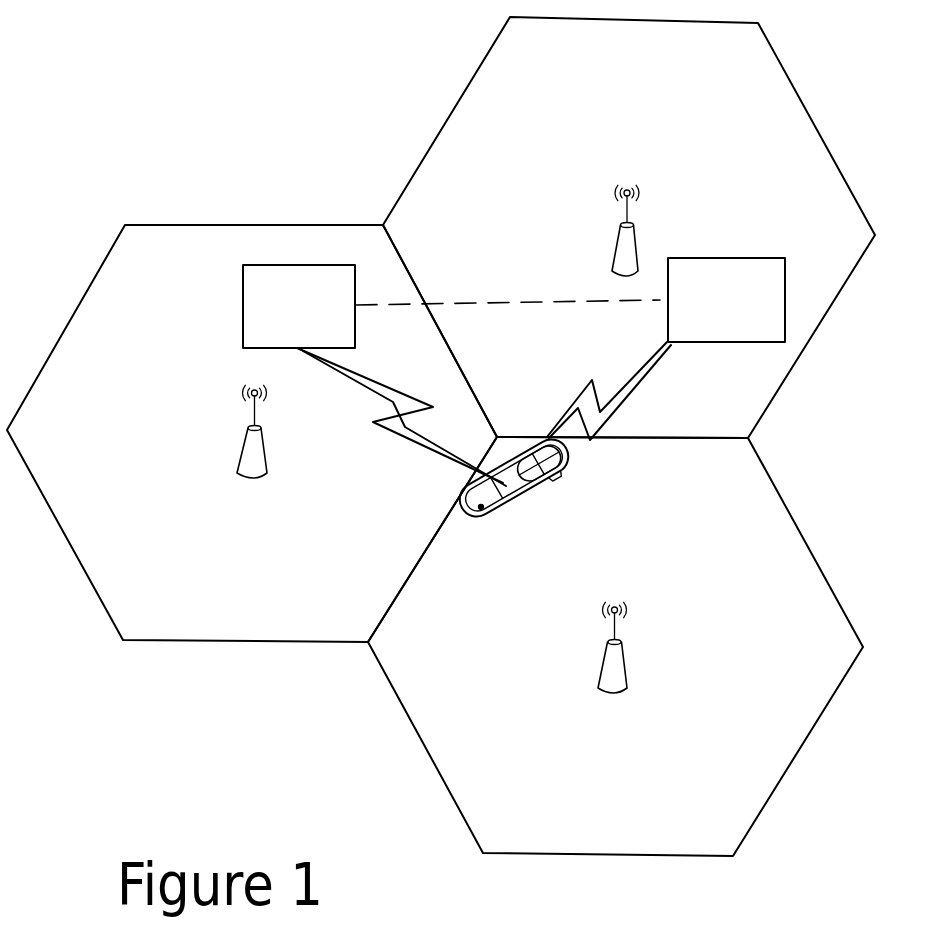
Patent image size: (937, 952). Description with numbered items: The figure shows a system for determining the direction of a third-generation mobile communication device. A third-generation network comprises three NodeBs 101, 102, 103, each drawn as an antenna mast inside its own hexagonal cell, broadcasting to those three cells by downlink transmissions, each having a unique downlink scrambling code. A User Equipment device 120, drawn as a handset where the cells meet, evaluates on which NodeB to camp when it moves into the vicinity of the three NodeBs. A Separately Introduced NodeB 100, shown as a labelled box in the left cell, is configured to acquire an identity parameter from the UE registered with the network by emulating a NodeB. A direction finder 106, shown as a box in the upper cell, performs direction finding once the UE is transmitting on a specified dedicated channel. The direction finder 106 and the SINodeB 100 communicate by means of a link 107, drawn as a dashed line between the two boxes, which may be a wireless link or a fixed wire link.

The Separately Introduced NodeB (SINodeB) 100 is at (300, 265).
The NodeB 101 is at (600, 668).
The NodeB 102 is at (242, 453).
The NodeB 103 is at (613, 237).
The direction finder 106 is at (727, 258).
The link 107 is at (477, 302).
The User Equipment device (UE) 120 is at (500, 533).